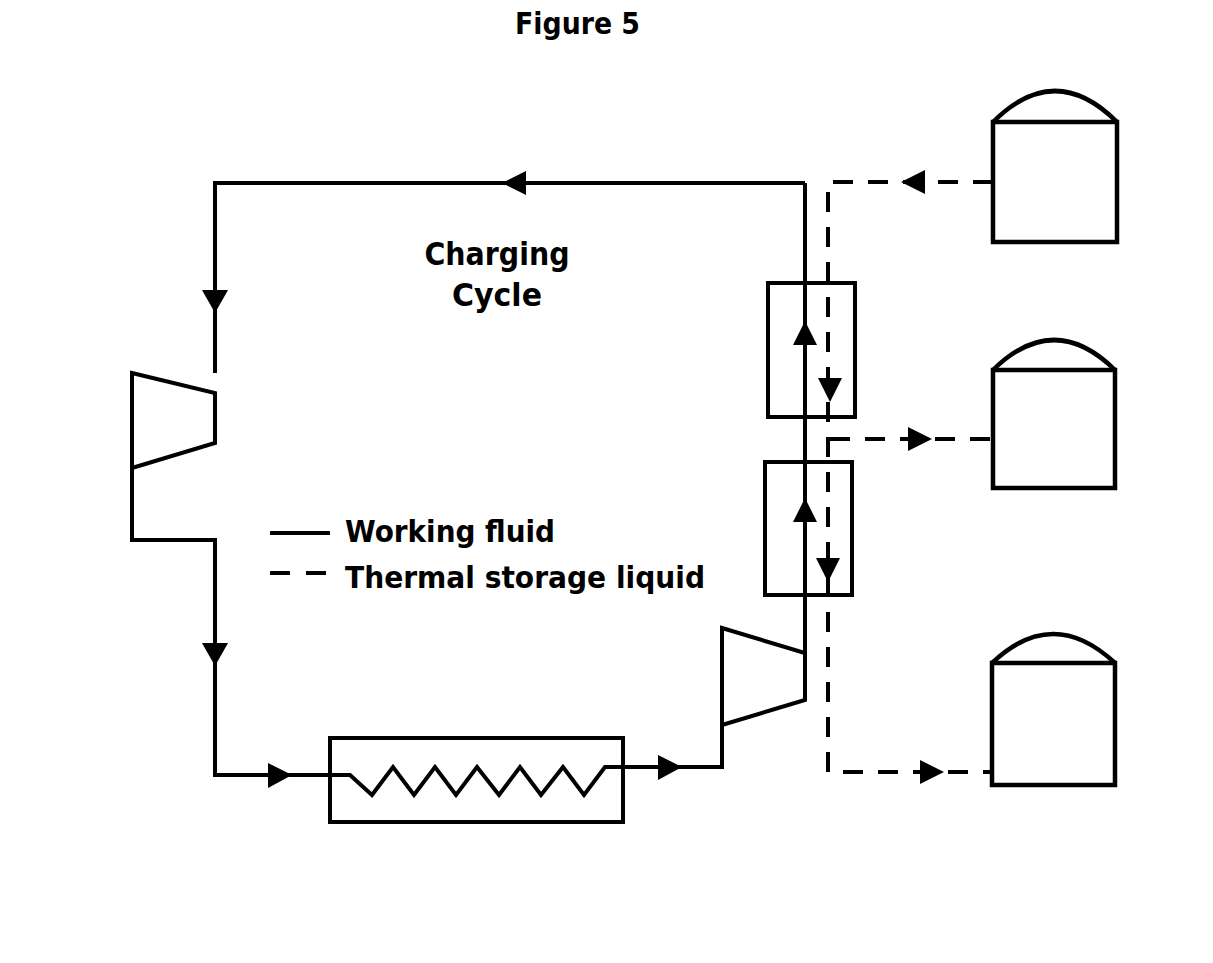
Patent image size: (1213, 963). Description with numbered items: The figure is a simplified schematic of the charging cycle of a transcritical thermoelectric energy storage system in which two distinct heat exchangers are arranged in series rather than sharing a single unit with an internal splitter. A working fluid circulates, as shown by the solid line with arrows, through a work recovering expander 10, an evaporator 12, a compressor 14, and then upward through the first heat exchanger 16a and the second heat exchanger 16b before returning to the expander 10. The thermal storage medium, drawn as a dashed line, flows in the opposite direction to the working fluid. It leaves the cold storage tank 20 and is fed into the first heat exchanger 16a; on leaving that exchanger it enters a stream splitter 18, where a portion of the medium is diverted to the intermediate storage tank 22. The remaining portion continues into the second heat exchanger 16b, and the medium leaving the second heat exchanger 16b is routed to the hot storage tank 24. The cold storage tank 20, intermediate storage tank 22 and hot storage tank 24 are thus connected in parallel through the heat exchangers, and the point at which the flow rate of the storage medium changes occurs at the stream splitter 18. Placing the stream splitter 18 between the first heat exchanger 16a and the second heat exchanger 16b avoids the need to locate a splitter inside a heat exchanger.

The work recovering expander 10 is at (132, 410).
The evaporator 12 is at (452, 822).
The compressor 14 is at (720, 663).
The first heat exchanger 16a is at (768, 350).
The second heat exchanger 16b is at (765, 520).
The stream splitter 18 is at (838, 442).
The cold storage tank 20 is at (1118, 176).
The intermediate storage tank 22 is at (1116, 428).
The hot storage tank 24 is at (1116, 718).